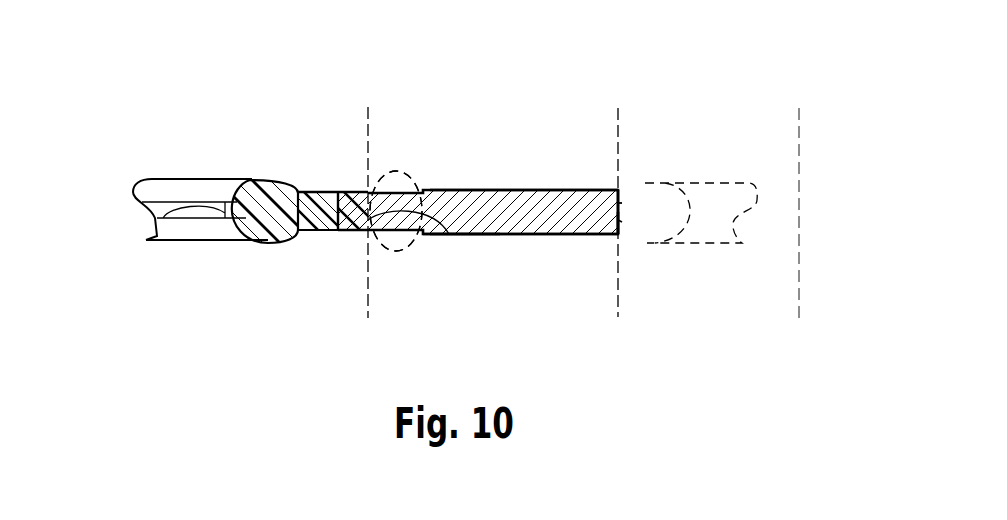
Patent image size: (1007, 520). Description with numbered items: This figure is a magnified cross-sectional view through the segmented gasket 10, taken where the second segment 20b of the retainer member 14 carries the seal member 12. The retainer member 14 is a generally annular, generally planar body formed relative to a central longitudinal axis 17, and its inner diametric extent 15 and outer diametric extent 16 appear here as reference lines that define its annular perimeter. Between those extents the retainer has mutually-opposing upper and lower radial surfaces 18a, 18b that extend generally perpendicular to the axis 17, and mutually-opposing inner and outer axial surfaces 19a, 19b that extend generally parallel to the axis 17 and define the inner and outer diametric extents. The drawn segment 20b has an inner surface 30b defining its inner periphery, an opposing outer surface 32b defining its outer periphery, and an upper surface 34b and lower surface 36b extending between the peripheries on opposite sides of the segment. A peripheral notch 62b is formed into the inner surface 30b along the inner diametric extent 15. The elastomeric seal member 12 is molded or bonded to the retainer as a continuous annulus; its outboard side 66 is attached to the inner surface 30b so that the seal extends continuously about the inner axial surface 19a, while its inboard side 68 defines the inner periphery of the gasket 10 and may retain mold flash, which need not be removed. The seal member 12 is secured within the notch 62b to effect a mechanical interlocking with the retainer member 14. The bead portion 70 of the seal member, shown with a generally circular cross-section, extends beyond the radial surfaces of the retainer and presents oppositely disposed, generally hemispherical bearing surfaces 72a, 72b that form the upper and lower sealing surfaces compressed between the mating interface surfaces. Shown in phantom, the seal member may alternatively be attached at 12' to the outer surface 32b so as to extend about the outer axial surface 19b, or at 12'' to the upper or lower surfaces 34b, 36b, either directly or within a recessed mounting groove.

The segmented gasket 10 is at (707, 95).
The seal member 12 is at (122, 180).
The seal member in phantom on outer surface 12' is at (574, 167).
The seal member in phantom on upper/lower surface 12'' is at (396, 261).
The retainer member 14 is at (618, 190).
The inner diametric extent 15 is at (367, 110).
The outer diametric extent 16 is at (619, 112).
The central longitudinal axis 17 is at (800, 128).
The upper radial surface 18a is at (484, 190).
The lower radial surface 18b is at (556, 234).
The inner axial surface 19a is at (341, 232).
The outer axial surface 19b is at (621, 220).
The second segment 20b is at (618, 235).
The inner surface of second segment 30b is at (346, 194).
The outer surface of second segment 32b is at (621, 203).
The upper surface of second segment 34b is at (548, 190).
The lower surface of second segment 36b is at (473, 234).
The peripheral notch 62b is at (311, 232).
The outboard side 66 is at (449, 234).
The inboard side 68 is at (160, 242).
The bead portion 70 is at (272, 180).
The upper bearing surface 72a is at (187, 179).
The lower bearing surface 72b is at (192, 241).